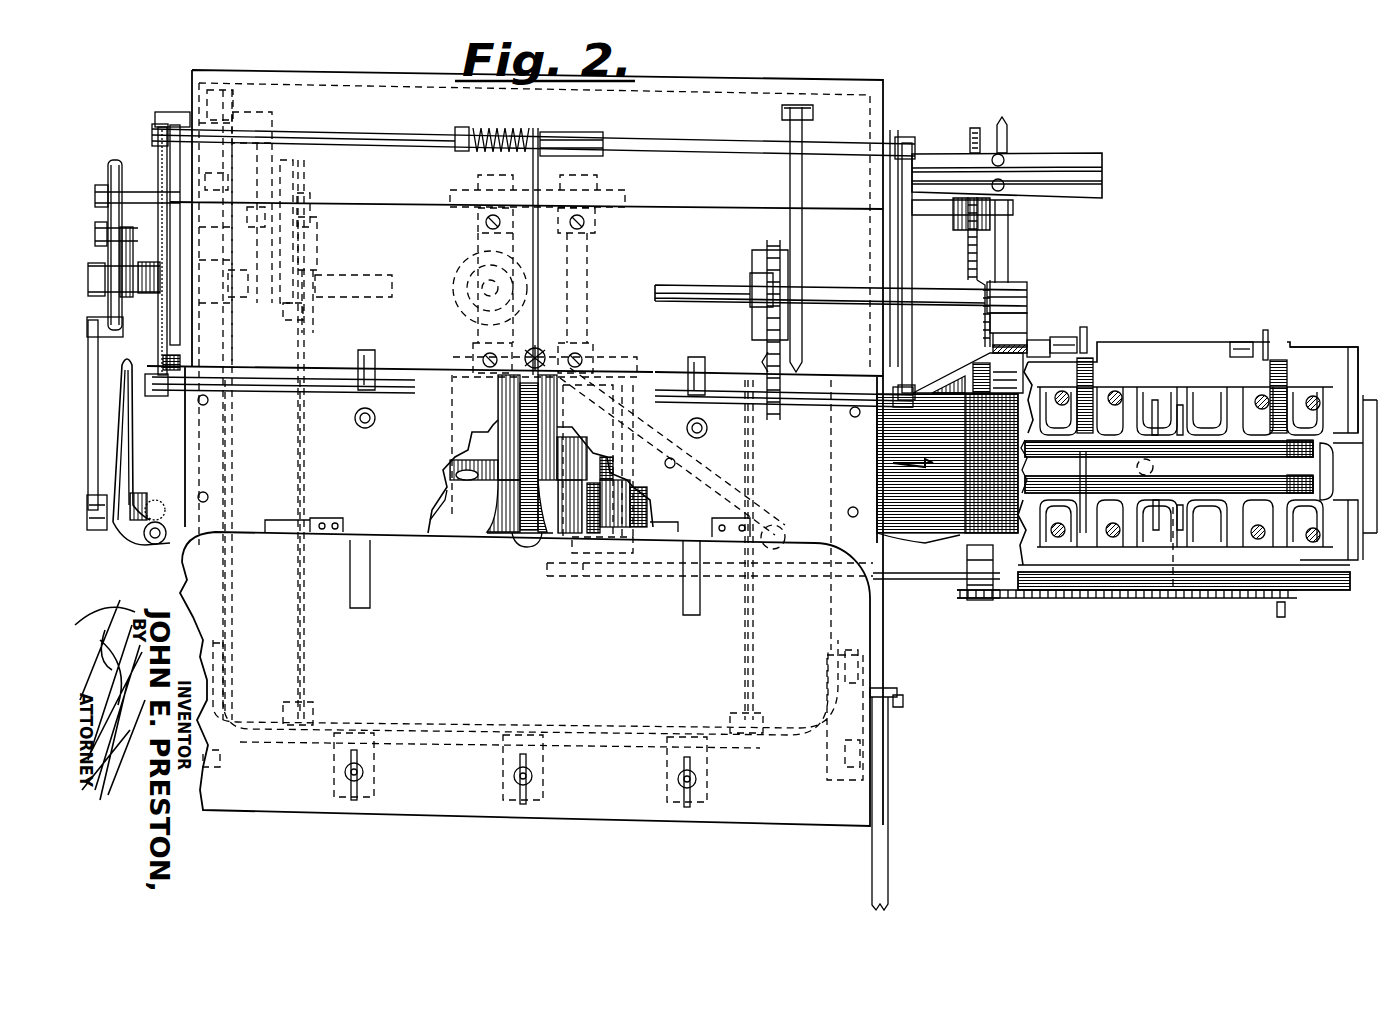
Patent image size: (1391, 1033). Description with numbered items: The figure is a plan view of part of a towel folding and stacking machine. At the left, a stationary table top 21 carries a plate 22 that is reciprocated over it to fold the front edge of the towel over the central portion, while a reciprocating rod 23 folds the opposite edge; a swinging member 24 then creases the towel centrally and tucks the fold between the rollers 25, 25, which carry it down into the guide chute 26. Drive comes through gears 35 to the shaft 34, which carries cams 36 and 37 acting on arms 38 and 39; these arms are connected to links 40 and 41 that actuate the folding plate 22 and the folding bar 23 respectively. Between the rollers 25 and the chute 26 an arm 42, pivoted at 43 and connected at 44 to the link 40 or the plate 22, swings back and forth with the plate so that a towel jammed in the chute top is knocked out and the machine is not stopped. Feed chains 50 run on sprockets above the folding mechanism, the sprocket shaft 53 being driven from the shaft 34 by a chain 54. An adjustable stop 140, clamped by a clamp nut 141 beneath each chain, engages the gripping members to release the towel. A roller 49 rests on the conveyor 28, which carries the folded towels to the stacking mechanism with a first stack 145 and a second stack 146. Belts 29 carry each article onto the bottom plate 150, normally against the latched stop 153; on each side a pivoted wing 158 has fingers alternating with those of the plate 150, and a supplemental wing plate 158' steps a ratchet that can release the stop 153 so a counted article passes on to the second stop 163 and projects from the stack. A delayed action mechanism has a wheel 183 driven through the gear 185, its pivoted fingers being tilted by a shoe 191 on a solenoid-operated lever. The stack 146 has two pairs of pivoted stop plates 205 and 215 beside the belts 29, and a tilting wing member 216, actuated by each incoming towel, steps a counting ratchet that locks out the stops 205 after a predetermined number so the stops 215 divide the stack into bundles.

The stationary table top 21 is at (515, 405).
The plate 22 is at (525, 679).
The reciprocating rod 23 is at (272, 388).
The swinging member 24 is at (538, 298).
The rollers 25 is at (480, 463).
The guide chute 26 is at (518, 534).
The conveyor 28 is at (900, 512).
The belts 29 is at (1083, 536).
The shaft 34 is at (370, 300).
The gears 35 is at (168, 390).
The cam 36 is at (312, 270).
The cam 37 is at (275, 302).
The arm 38 is at (303, 192).
The arm 39 is at (260, 222).
The link 40 is at (300, 637).
The link 41 is at (158, 160).
The arm 42 is at (622, 438).
The pivot 43 is at (675, 462).
The connection 44 is at (767, 533).
The roller 49 is at (612, 528).
The feed chains 50 is at (766, 364).
The shaft 53 is at (858, 292).
The chain 54 is at (990, 258).
The stop 140 is at (758, 326).
The clamp nut 141 is at (765, 270).
The first stack 145 is at (1260, 537).
The second stack 146 is at (1058, 533).
The bottom plate 150 is at (1207, 503).
The stop 153 is at (1353, 437).
The supporting member or wing 158 is at (1191, 371).
The supplemental wing plate 158' is at (1306, 369).
The second stop 163 is at (1367, 487).
The rotating member or wheel 183 is at (1007, 238).
The gear 185 is at (975, 252).
The shoe 191 is at (1010, 218).
The stop plates 205 is at (1153, 407).
The stop plates 215 is at (1172, 592).
The tilting wing member 216 is at (1095, 382).